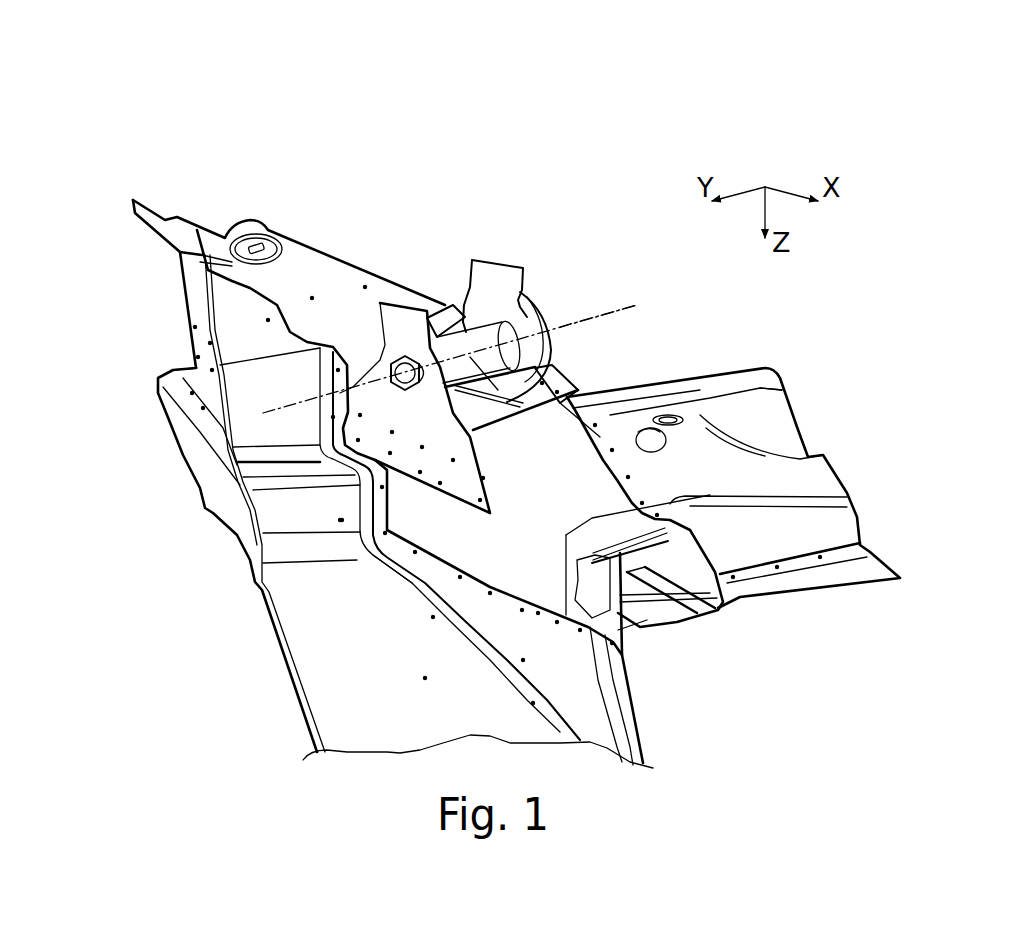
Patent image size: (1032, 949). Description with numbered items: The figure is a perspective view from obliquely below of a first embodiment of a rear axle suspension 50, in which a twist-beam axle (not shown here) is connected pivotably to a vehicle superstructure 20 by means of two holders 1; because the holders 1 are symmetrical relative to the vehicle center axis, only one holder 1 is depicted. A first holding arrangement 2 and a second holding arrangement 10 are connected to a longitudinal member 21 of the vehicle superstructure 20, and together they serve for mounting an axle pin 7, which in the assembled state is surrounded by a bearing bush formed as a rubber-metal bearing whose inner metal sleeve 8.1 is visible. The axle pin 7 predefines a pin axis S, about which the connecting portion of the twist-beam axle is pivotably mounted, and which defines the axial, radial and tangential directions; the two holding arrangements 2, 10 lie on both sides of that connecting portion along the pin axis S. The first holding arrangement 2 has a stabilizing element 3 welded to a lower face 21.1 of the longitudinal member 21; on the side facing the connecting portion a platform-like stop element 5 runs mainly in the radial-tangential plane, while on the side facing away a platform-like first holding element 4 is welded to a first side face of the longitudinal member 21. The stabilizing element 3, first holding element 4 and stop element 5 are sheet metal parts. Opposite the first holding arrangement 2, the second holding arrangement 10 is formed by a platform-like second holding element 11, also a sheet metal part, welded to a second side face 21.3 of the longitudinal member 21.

The rear axle suspension 50 is at (578, 130).
The holder 1 is at (430, 254).
The first holding arrangement 2 is at (524, 246).
The stabilizing element 3 is at (575, 372).
The first holding element 4 is at (548, 362).
The stop element 5 is at (502, 270).
The axle pin 7 is at (392, 378).
The inner metal sleeve 8.1 is at (782, 390).
The second holding arrangement 10 is at (375, 385).
The second holding element 11 is at (460, 470).
The vehicle superstructure 20 is at (130, 257).
The longitudinal member 21 is at (282, 228).
The lower face 21.1 is at (335, 285).
The second side face 21.3 is at (458, 527).
The pin axis S is at (625, 303).